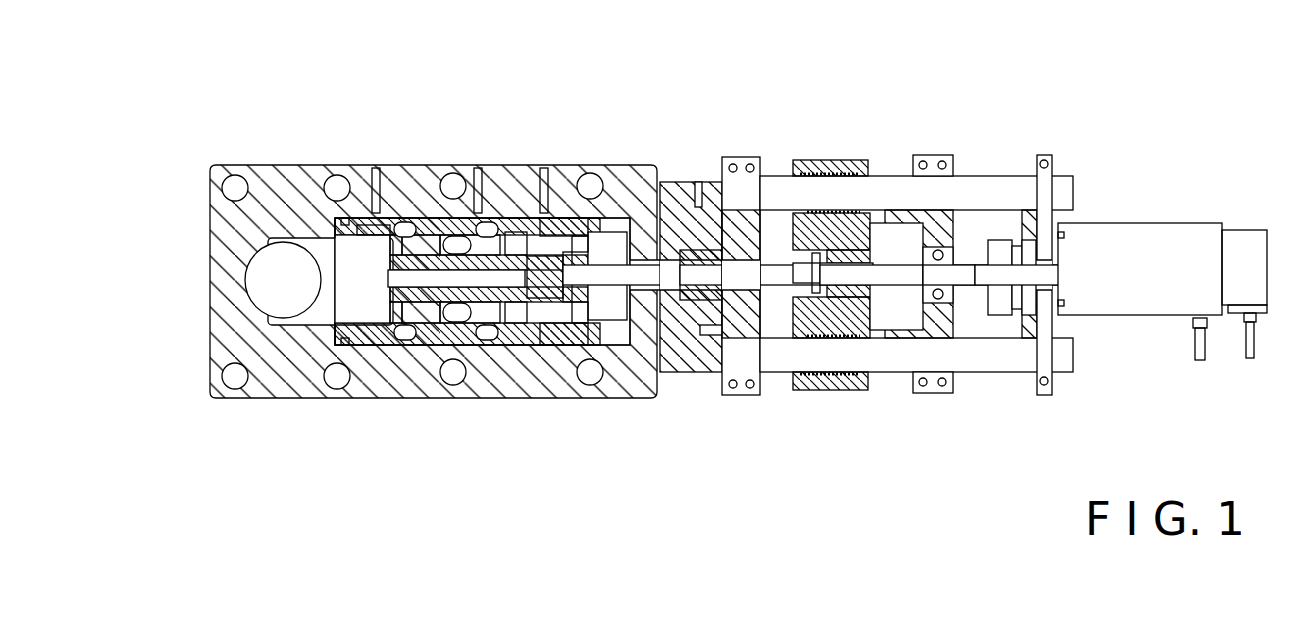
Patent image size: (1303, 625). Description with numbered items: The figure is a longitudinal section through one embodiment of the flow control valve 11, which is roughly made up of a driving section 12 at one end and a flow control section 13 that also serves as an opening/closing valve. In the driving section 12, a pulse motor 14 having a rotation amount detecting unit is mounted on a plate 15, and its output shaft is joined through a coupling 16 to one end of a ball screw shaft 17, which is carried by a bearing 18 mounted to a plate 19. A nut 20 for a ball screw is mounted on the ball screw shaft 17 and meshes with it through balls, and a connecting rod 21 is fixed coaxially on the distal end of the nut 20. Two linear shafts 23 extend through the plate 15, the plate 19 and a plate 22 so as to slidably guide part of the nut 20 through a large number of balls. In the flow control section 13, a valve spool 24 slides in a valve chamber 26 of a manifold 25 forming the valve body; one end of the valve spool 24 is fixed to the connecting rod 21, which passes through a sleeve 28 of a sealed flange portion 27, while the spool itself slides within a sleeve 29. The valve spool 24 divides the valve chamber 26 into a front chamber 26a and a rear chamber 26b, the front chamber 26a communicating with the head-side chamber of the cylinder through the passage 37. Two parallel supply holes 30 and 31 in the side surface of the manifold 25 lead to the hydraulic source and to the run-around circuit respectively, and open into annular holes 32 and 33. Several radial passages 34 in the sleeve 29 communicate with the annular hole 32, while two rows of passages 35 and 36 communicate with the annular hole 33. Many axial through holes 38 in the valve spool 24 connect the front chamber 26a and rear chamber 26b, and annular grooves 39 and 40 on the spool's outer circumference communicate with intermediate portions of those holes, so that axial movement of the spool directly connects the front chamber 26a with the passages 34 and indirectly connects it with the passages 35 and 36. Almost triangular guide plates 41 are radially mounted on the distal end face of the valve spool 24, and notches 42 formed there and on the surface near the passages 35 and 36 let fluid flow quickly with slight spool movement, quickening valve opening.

The flow control valve 11 is at (656, 166).
The driving section 12 is at (938, 285).
The flow control section 13 is at (258, 166).
The pulse motor 14 is at (1188, 222).
The plate 15 is at (1048, 398).
The coupling 16 is at (1002, 318).
The ball screw shaft 17 is at (889, 285).
The bearing 18 is at (966, 248).
The plate 19 is at (932, 160).
The nut 20 is at (846, 390).
The connecting rod 21 is at (708, 300).
The plate 22 is at (746, 160).
The linear shafts 23 is at (880, 186).
The valve spool 24 is at (535, 256).
The manifold 25 is at (368, 218).
The valve chamber 26 is at (300, 350).
The front chamber 26a is at (353, 260).
The rear chamber 26b is at (612, 322).
The sealed flange portion 27 is at (682, 184).
The sleeve 28 is at (690, 290).
The sleeve 29 is at (640, 166).
The supply hole 30 is at (396, 235).
The supply hole 31 is at (516, 232).
The annular hole 32 is at (420, 217).
The annular hole 33 is at (578, 218).
The passages 34 is at (418, 235).
The passages 35 is at (497, 235).
The passages 36 is at (566, 252).
The passage 37 is at (260, 297).
The through holes 38 is at (345, 218).
The annular groove 39 is at (458, 325).
The annular groove 40 is at (498, 340).
The guide plates 41 is at (386, 332).
The notches 42 is at (376, 168).